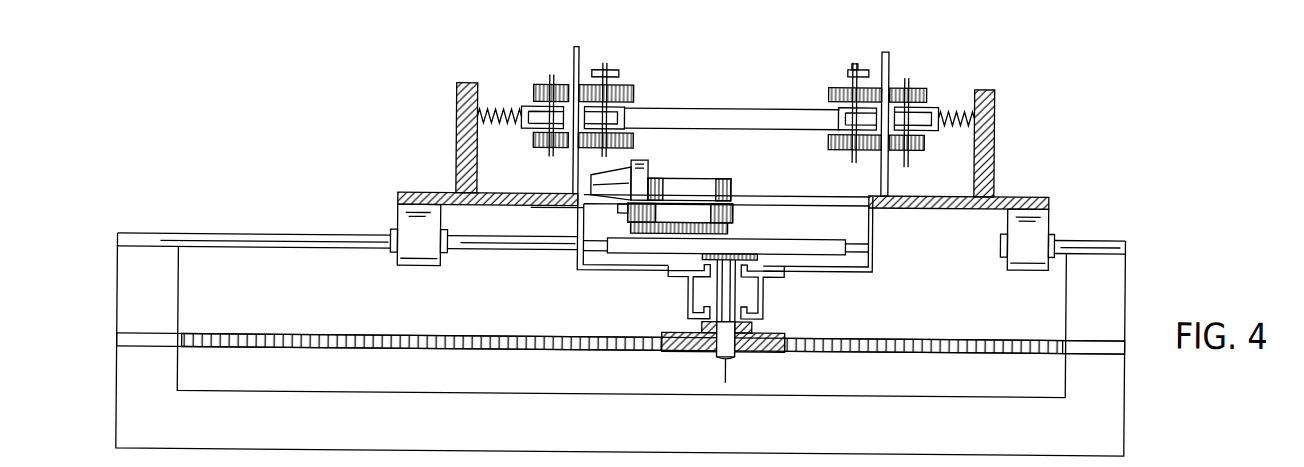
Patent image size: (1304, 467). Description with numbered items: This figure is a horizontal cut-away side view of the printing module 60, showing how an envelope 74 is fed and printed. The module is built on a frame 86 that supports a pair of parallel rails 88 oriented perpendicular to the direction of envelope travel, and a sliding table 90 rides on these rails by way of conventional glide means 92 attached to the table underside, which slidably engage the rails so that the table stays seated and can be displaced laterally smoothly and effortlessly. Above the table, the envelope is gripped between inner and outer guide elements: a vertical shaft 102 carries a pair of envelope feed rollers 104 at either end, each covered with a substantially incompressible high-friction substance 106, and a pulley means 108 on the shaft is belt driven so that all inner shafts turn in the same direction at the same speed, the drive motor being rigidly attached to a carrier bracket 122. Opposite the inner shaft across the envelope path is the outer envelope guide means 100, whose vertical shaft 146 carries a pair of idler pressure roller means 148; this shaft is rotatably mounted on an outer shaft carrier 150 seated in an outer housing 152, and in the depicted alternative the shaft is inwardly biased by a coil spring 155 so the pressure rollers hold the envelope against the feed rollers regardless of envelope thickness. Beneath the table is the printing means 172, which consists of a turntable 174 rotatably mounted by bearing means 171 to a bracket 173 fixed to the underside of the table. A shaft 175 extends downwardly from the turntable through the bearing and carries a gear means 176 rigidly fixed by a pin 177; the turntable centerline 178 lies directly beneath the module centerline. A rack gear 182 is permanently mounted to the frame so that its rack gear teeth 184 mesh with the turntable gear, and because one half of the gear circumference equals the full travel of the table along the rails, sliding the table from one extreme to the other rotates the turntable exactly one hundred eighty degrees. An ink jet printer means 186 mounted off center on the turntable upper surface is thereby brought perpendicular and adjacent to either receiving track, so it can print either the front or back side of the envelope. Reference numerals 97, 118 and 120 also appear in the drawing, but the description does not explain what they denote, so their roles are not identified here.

The printing module 60 is at (1135, 177).
The envelope 74 is at (571, 52).
The frame 86 is at (1110, 292).
The rails 88 is at (197, 235).
The sliding table 90 is at (1033, 195).
The glide means 92 is at (397, 213).
The drive assembly 97 is at (893, 81).
The outer envelope guide means 100 is at (955, 68).
The vertical shaft 102 is at (853, 159).
The envelope feed roller 104 is at (849, 73).
The incompressible substance 106 is at (835, 87).
The pulley means 108 is at (608, 70).
The bracket 118 is at (837, 117).
The bracket 120 is at (623, 110).
The carrier bracket 122 is at (699, 108).
The vertical shaft 146 is at (905, 165).
The pressure roller means 148 is at (925, 90).
The outer shaft carrier 150 is at (937, 103).
The outer housing 152 is at (990, 161).
The coil spring 155 is at (988, 142).
The bearing means 171 is at (745, 279).
The printing means 172 is at (713, 154).
The bracket 173 is at (600, 271).
The turntable 174 is at (830, 250).
The shaft 175 is at (715, 298).
The gear means 176 is at (775, 338).
The pin 177 is at (735, 353).
The turntable centerline 178 is at (732, 247).
The rack gear 182 is at (912, 338).
The rack gear teeth 184 is at (985, 339).
The ink jet printer means 186 is at (676, 179).